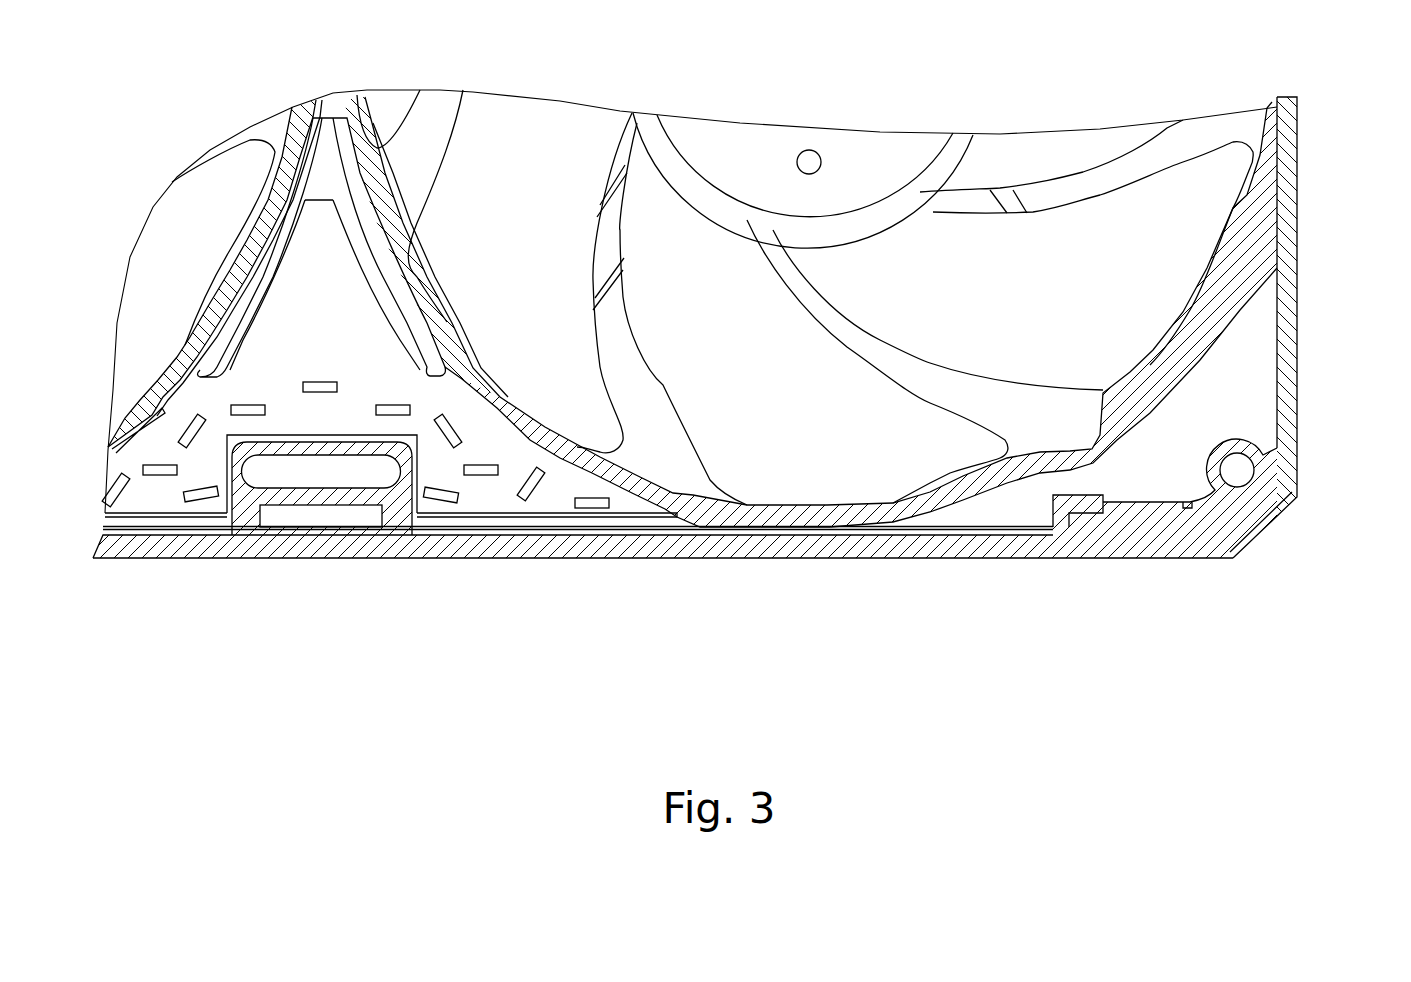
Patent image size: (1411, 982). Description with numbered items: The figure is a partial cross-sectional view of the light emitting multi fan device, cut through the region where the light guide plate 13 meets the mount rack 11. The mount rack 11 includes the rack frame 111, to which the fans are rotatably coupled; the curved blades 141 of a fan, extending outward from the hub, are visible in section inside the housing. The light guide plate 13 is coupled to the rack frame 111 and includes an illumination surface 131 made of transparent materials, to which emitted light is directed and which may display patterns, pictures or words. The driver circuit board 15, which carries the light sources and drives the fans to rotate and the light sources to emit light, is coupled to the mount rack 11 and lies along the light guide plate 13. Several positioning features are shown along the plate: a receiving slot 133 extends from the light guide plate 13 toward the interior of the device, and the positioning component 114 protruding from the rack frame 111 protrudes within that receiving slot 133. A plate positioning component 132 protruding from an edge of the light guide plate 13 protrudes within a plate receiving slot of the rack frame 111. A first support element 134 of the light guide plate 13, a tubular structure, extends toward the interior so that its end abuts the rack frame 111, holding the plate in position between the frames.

The mount rack 11 is at (1328, 201).
The rack frame 111 is at (1275, 172).
The light guide plate 13 is at (895, 579).
The illumination surface 131 is at (533, 548).
The plate positioning component 132 is at (1087, 505).
The receiving slot 133 is at (291, 507).
The first support element 134 is at (302, 445).
The positioning component 114 is at (349, 522).
The driver circuit board 15 is at (153, 505).
The blades 141 is at (527, 140).